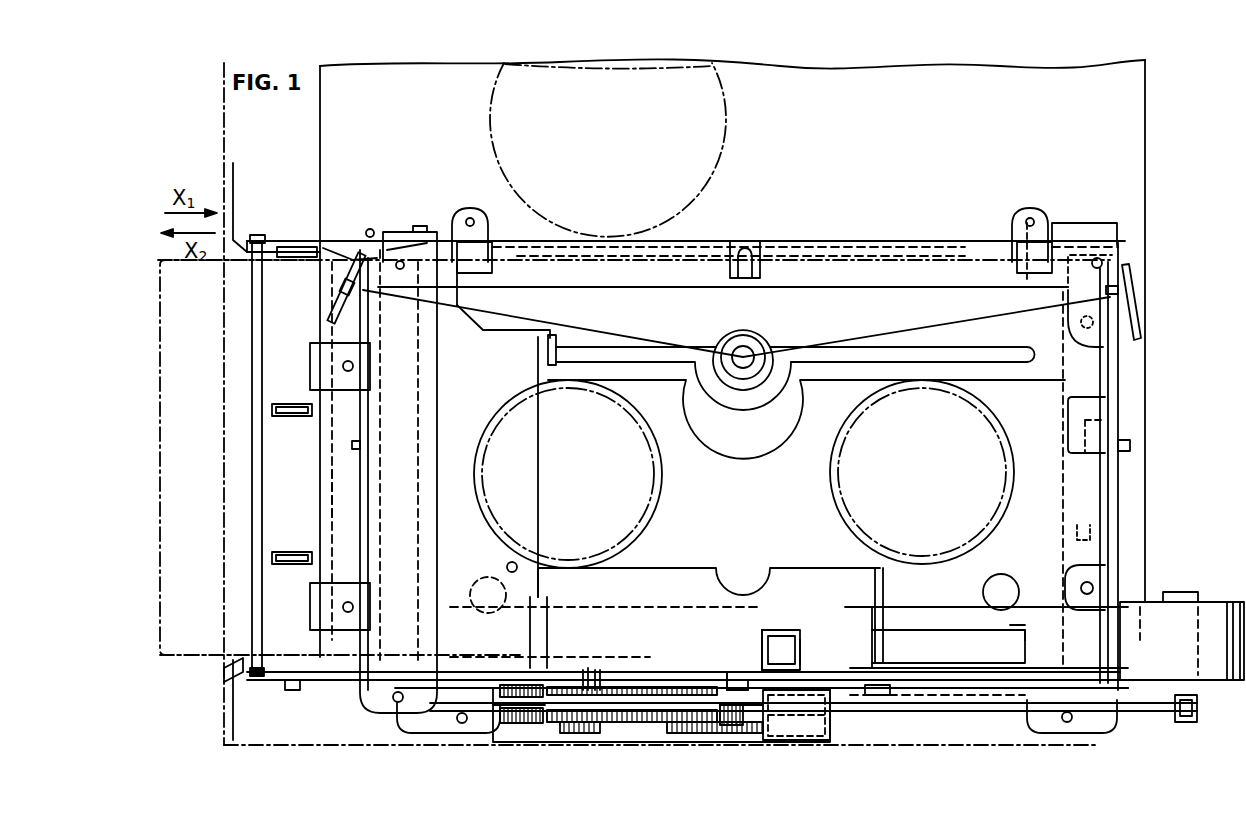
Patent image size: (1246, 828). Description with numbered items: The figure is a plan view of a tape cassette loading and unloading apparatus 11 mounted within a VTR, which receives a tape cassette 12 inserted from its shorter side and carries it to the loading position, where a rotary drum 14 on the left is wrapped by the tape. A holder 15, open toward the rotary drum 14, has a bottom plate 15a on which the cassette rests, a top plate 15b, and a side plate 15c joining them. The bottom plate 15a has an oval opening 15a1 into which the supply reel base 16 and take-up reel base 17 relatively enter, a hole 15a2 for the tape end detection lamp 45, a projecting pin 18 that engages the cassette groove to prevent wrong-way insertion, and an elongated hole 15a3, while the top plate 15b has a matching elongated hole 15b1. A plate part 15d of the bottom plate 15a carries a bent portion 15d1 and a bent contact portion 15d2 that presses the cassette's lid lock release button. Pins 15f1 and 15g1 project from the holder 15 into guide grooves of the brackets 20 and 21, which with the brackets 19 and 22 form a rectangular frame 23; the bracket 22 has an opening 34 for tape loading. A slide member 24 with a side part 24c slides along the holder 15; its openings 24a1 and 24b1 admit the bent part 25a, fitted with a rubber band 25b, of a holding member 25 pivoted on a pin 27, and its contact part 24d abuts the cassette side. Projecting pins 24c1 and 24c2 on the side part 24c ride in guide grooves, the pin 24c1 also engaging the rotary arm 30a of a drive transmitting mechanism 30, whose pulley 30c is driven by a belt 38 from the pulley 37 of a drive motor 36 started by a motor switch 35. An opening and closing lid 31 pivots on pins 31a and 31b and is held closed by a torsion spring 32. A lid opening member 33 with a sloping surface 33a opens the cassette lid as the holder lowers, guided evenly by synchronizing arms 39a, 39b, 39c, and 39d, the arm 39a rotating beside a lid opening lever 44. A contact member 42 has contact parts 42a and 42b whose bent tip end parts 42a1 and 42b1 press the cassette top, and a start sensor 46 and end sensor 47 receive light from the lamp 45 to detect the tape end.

The tape cassette loading and unloading apparatus 11 is at (878, 240).
The tape cassette 12 is at (160, 332).
The rotary drum 14 is at (731, 118).
The holder 15 is at (807, 329).
The bottom plate 15a is at (665, 345).
The oval opening 15a1 is at (835, 378).
The hole 15a2 is at (748, 343).
The elongated hole 15a3 is at (1015, 630).
The top plate 15b is at (950, 617).
The elongated hole 15b1 is at (1034, 595).
The side plate 15c is at (1005, 655).
The plate part 15d is at (1108, 497).
The bent portion 15d1 is at (1083, 450).
The bent contact portion 15d2 is at (1110, 330).
The pin 15f1 is at (352, 446).
The pin 15g1 is at (1130, 446).
The supply reel base 16 is at (662, 465).
The take-up reel base 17 is at (1004, 432).
The projecting pin 18 is at (510, 566).
The bracket 19 is at (915, 698).
The bracket 20 is at (295, 262).
The bracket 21 is at (1118, 396).
The bracket 22 is at (816, 241).
The rectangular frame 23 is at (1121, 261).
The slide member 24 is at (783, 620).
The opening 24a1 is at (780, 636).
The opening 24b1 is at (751, 640).
The side part 24c is at (647, 670).
The projecting pin 24c1 is at (590, 673).
The projecting pin 24c2 is at (737, 692).
The contact part 24d is at (884, 583).
The holding member 25 is at (785, 670).
The bent part 25a is at (800, 640).
The rubber band 25b is at (800, 651).
The pin 27 is at (873, 690).
The drive transmitting mechanism 30 is at (651, 744).
The rotary arm 30a is at (573, 687).
The pulley 30c is at (850, 717).
The opening and closing lid 31 is at (250, 345).
The pin 31a is at (257, 686).
The pin 31b is at (257, 235).
The torsion spring 32 is at (240, 672).
The lid opening member 33 is at (1078, 223).
The sloping surface 33a is at (1022, 266).
The opening 34 is at (709, 265).
The motor switch 35 is at (590, 735).
The drive motor 36 is at (1218, 600).
The pulley 37 is at (1192, 714).
The belt 38 is at (945, 710).
The arm 39a is at (455, 680).
The arm 39b is at (1003, 690).
The arm 39c is at (358, 492).
The arm 39d is at (1118, 535).
The contact member 42 is at (540, 433).
The contact part 42a is at (533, 640).
The tip end part 42a1 is at (548, 642).
The contact part 42b is at (553, 338).
The tip end part 42b1 is at (583, 362).
The lid opening lever 44 is at (296, 688).
The tape end detection lamp 45 is at (745, 369).
The start sensor 46 is at (1118, 290).
The end sensor 47 is at (340, 288).